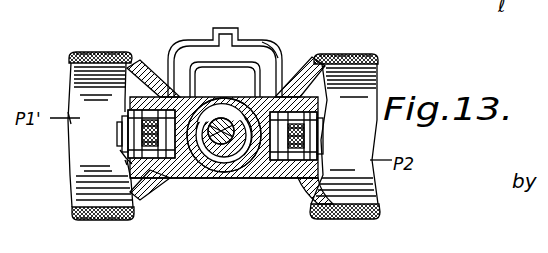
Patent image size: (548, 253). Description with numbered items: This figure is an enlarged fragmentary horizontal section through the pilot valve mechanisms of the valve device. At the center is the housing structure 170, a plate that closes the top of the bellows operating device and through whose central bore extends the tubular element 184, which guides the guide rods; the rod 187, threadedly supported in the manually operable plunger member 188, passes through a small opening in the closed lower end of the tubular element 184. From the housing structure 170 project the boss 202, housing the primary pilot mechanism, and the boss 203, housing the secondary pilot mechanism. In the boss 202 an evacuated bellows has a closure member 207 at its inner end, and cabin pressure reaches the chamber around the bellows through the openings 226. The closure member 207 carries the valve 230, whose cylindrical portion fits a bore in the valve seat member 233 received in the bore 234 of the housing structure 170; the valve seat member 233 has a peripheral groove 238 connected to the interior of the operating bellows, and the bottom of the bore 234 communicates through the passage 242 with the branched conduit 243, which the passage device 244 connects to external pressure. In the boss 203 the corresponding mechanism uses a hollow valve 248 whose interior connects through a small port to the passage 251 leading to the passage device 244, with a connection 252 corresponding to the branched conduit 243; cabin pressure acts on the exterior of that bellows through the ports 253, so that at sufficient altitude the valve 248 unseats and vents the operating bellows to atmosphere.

The boss 202 is at (78, 54).
The boss 203 is at (372, 58).
The closure member 207 is at (122, 128).
The openings 226 is at (117, 52).
The valve 230 is at (122, 138).
The valve seat member 233 is at (126, 150).
The bore 234 is at (133, 103).
The peripheral groove 238 is at (160, 181).
The passage 242 is at (168, 94).
The branched conduit 243 is at (200, 48).
The passage device 244 is at (236, 36).
The valve 248 is at (320, 136).
The passage 251 is at (284, 78).
The connection 252 is at (270, 54).
The ports 253 is at (338, 49).
The housing structure 170 is at (194, 182).
The tubular element 184 is at (250, 178).
The rod 187 is at (213, 176).
The plunger member 188 is at (236, 180).